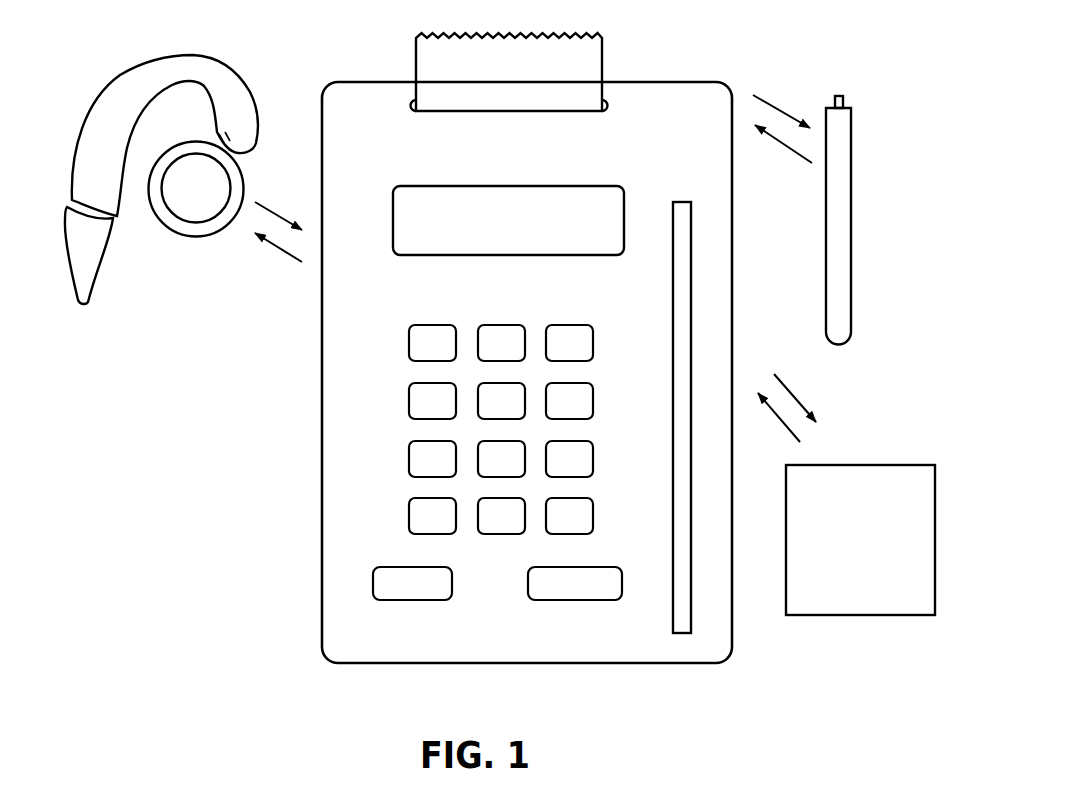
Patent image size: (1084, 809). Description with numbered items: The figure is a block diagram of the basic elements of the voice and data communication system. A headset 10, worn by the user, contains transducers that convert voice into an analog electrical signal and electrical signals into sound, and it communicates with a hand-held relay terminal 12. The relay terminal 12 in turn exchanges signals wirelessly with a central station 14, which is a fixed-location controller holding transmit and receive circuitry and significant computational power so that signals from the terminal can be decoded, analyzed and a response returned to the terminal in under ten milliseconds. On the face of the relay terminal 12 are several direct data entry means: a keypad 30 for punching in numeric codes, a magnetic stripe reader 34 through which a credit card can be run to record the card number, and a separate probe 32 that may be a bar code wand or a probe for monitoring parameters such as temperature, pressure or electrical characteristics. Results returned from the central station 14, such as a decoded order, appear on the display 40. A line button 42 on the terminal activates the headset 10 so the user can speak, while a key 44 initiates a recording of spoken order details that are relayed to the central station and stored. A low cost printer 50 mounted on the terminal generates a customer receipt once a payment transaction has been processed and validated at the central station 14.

The headset 10 is at (232, 55).
The relay terminal 12 is at (302, 373).
The central station 14 is at (876, 466).
The keypad 30 is at (410, 428).
The probe 32 is at (845, 205).
The magnetic stripe reader 34 is at (685, 267).
The display 40 is at (470, 256).
The line button 42 is at (400, 600).
The key 44 is at (570, 600).
The printer 50 is at (605, 100).